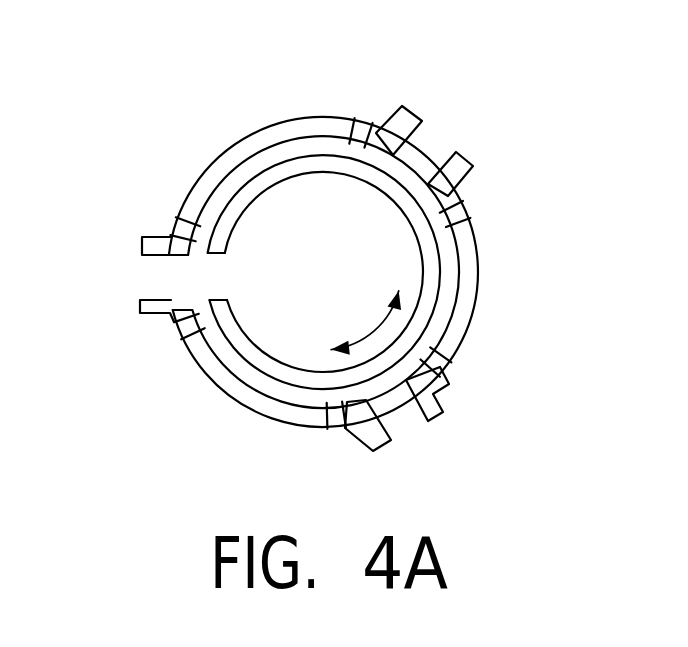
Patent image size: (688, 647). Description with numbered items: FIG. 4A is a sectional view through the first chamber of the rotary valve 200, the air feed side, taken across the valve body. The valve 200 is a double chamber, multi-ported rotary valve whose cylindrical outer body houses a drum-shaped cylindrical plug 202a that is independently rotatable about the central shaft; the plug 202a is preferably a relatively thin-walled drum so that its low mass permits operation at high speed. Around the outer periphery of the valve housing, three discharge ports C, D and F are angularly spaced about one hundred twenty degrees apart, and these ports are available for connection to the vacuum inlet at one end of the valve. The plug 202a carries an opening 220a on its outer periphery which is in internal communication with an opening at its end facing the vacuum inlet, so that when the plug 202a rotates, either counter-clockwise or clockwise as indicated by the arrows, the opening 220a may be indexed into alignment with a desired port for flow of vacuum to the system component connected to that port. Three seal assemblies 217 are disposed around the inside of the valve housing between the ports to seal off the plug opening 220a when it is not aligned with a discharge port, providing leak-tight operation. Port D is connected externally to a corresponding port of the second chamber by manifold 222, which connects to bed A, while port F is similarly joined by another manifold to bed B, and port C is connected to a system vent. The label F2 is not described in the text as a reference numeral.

The rotary valve 200 is at (126, 33).
The seal assemblies 217 is at (262, 158).
The opening 220a is at (220, 298).
The plug 202a is at (248, 198).
The manifold 222 is at (359, 274).
The port C is at (158, 298).
The port D is at (378, 426).
The port F is at (423, 141).
The foot clip F2 is at (171, 236).